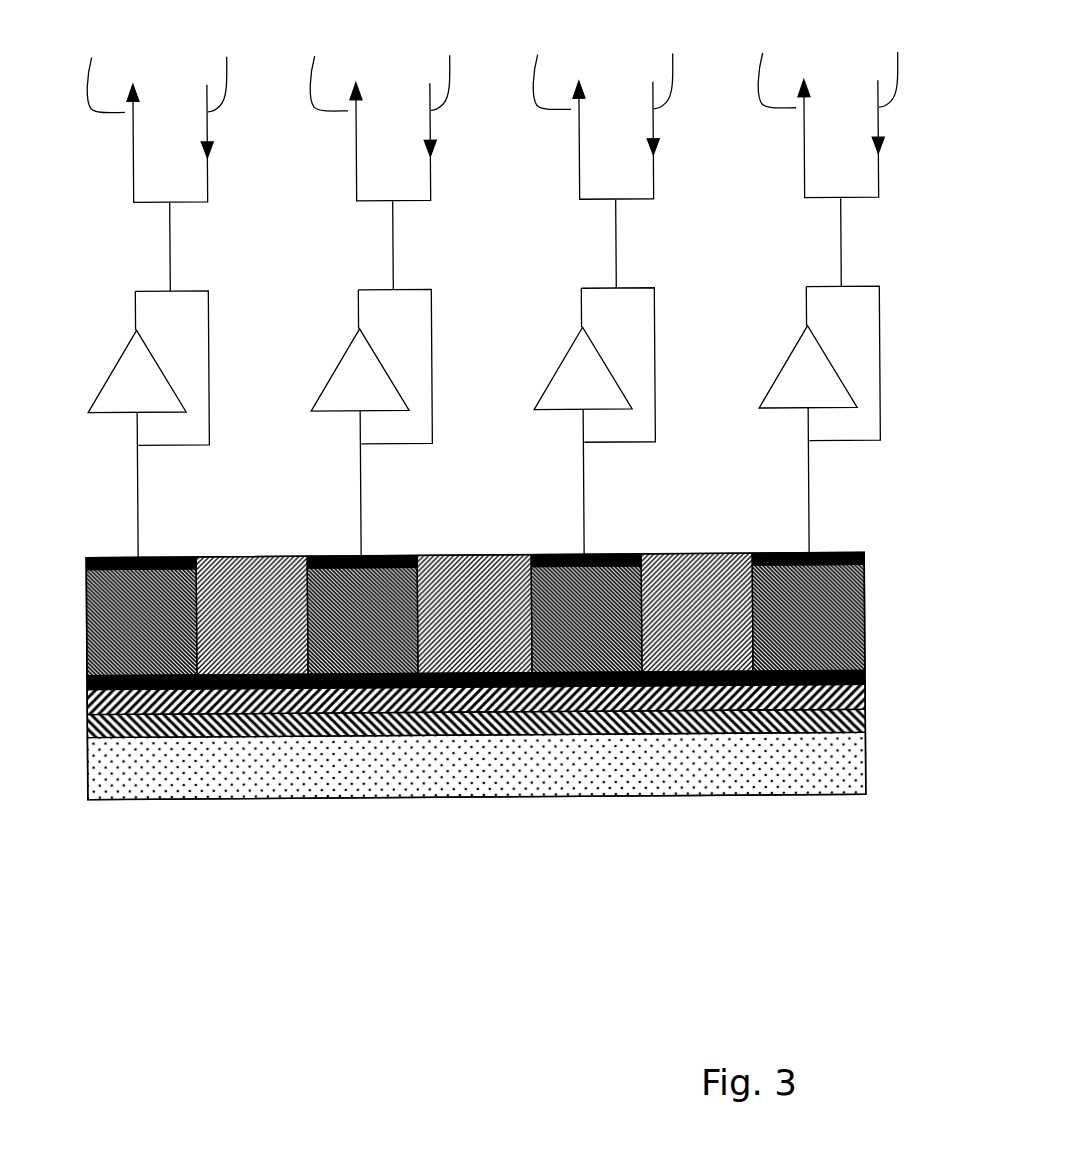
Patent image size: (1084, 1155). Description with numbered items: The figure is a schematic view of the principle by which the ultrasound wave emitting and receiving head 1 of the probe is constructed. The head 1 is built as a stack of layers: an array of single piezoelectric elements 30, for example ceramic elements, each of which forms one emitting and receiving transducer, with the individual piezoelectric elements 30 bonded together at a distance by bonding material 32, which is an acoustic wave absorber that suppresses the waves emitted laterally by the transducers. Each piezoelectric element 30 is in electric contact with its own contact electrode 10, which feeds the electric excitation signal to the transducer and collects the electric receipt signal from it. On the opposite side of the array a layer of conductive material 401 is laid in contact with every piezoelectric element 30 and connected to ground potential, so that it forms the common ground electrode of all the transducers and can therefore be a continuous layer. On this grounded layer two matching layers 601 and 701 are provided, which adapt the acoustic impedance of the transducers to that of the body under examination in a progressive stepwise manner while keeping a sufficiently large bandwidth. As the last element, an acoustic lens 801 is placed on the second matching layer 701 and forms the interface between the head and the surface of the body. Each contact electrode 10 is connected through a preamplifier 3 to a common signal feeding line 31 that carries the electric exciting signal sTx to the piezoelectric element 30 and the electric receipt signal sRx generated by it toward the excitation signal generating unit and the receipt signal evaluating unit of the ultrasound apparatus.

The ultrasound wave emitting and receiving head 1 is at (645, 820).
The preamplifier 3 is at (129, 368).
The contact electrode 10 is at (148, 556).
The piezoelectric element 30 is at (403, 556).
The signal feeding line 31 is at (174, 253).
The bonding material 32 is at (691, 578).
The layer of conductive material 401 is at (866, 683).
The first matching layer 601 is at (151, 703).
The second matching layer 701 is at (301, 733).
The acoustic lens 801 is at (508, 773).